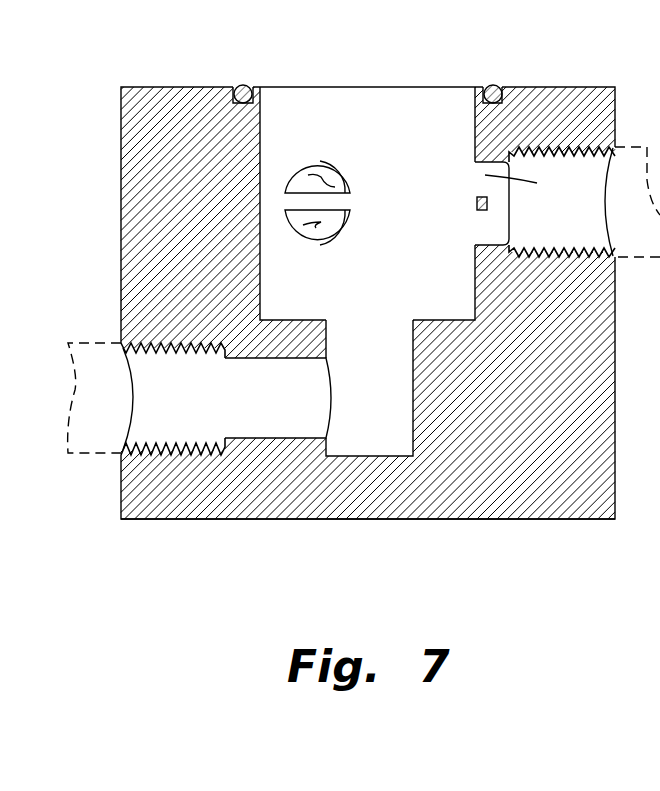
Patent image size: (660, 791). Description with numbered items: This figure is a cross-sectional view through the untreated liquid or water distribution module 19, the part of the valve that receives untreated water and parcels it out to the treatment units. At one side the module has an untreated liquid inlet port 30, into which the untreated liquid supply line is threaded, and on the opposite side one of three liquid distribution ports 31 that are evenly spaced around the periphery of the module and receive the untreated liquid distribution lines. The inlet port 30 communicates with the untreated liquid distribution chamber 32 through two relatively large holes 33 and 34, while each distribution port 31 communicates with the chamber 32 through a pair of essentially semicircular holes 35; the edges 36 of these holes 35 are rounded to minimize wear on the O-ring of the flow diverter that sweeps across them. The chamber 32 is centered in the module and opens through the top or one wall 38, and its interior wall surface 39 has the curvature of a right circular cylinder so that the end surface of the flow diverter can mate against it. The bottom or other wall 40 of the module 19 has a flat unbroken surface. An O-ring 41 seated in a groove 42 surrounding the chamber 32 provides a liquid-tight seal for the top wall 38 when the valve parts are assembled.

The untreated liquid distribution module 19 is at (585, 552).
The untreated liquid inlet port 30 is at (127, 368).
The liquid distribution port 31 is at (605, 197).
The untreated liquid distribution chamber 32 is at (333, 127).
The hole 33 is at (299, 413).
The hole 34 is at (389, 398).
The semicircular hole 35 is at (325, 183).
The edge of hole 36 is at (475, 163).
The top wall 38 is at (553, 87).
The interior wall surface 39 is at (422, 103).
The bottom wall 40 is at (435, 519).
The O-ring 41 is at (250, 86).
The groove 42 is at (233, 88).